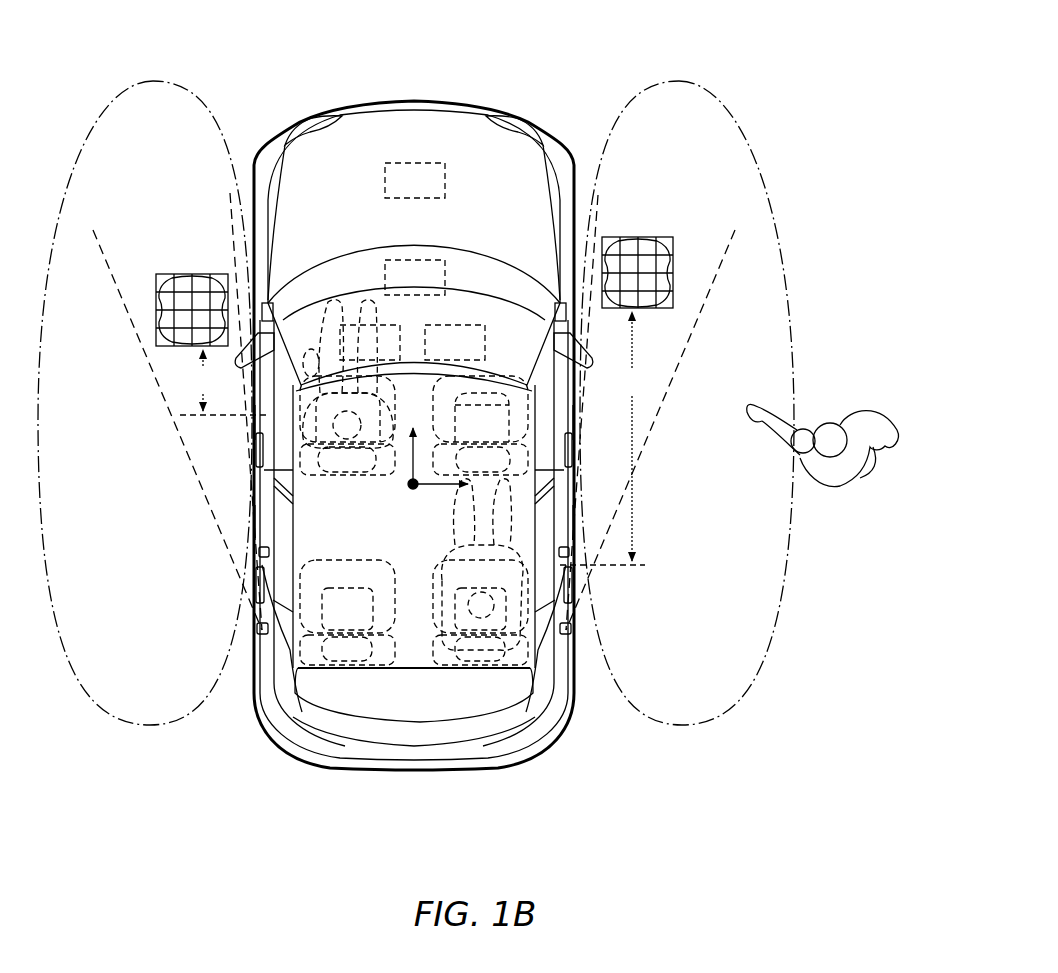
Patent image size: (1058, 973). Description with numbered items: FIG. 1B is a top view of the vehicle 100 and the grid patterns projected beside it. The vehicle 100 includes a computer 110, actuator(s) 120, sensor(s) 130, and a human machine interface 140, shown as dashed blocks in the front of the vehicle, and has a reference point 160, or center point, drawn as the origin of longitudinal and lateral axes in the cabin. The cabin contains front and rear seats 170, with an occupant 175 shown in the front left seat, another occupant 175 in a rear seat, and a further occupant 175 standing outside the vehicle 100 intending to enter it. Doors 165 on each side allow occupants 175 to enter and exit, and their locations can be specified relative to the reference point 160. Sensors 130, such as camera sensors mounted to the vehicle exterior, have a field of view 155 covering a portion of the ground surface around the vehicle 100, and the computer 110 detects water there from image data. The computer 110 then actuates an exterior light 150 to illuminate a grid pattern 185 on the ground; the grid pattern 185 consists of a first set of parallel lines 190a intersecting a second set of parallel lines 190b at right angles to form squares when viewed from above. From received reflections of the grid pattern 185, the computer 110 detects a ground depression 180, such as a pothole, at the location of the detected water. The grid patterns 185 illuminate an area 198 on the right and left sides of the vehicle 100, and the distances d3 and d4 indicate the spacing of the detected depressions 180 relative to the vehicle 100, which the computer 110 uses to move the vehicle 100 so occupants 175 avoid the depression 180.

The vehicle 100 is at (400, 533).
The computer 110 is at (415, 277).
The actuator 120 is at (415, 180).
The sensor 130 is at (200, 663).
The human machine interface 140 is at (370, 342).
The exterior light 150 is at (310, 123).
The field of view 155 is at (157, 397).
The reference point 160 is at (410, 487).
The door 165 is at (263, 421).
The seat 170 is at (265, 477).
The occupant 175 is at (341, 462).
The ground depression 180 is at (183, 293).
The grid pattern 185 is at (152, 316).
The first set of parallel lines 190a is at (158, 292).
The second set of parallel lines 190b is at (205, 275).
The area 198 is at (153, 81).
The distance d3 is at (223, 382).
The distance d4 is at (603, 438).